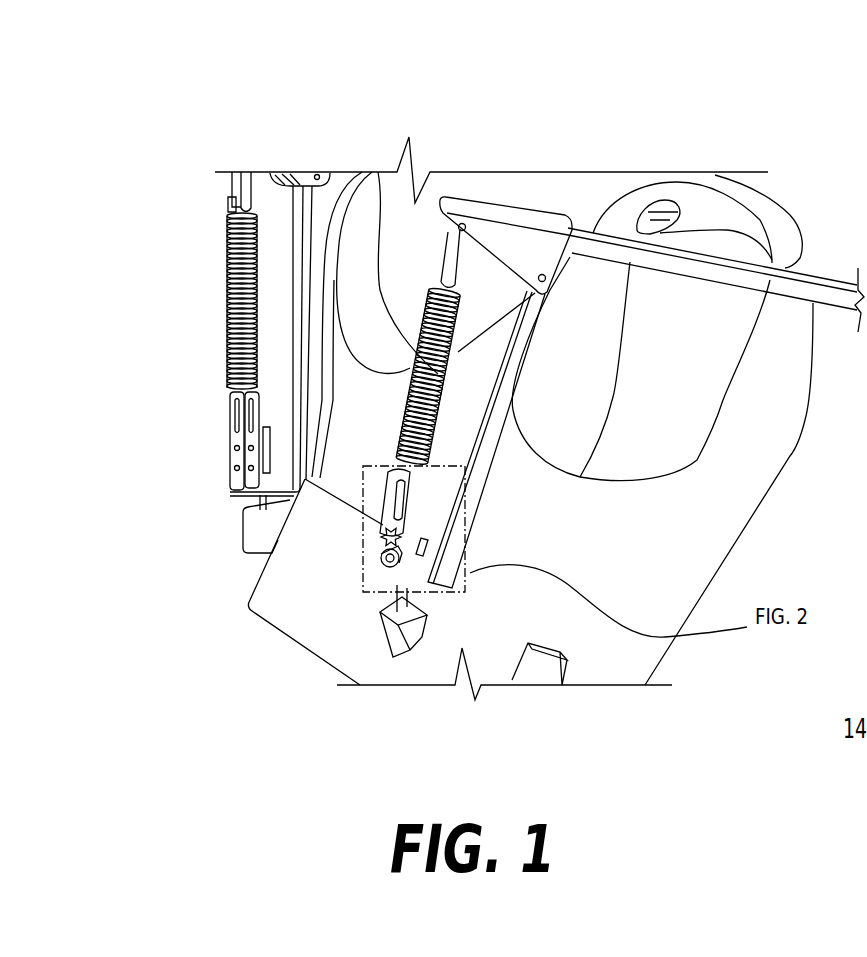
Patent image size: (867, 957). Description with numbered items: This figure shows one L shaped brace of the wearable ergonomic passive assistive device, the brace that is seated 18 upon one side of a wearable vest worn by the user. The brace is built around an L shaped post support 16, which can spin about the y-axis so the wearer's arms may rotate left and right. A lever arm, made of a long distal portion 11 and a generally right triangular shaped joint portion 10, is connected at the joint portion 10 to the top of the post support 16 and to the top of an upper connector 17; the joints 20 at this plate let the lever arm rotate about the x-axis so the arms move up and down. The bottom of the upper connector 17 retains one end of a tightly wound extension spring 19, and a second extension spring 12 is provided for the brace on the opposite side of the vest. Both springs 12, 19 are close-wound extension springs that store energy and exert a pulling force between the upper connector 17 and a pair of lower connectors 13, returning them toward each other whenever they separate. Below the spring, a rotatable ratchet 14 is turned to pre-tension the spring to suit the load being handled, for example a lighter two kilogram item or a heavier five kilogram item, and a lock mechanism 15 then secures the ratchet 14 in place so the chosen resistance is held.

The joint portion 10 is at (571, 211).
The distal portion 11 is at (816, 275).
The spring 12 is at (222, 343).
The lower connectors 13 is at (222, 450).
The ratchet 14 is at (378, 536).
The lock mechanism 15 is at (390, 567).
The post support 16 is at (492, 498).
The upper connector 17 is at (222, 192).
The seat 18 is at (414, 670).
The spring 19 is at (378, 172).
The joints 20 is at (542, 272).